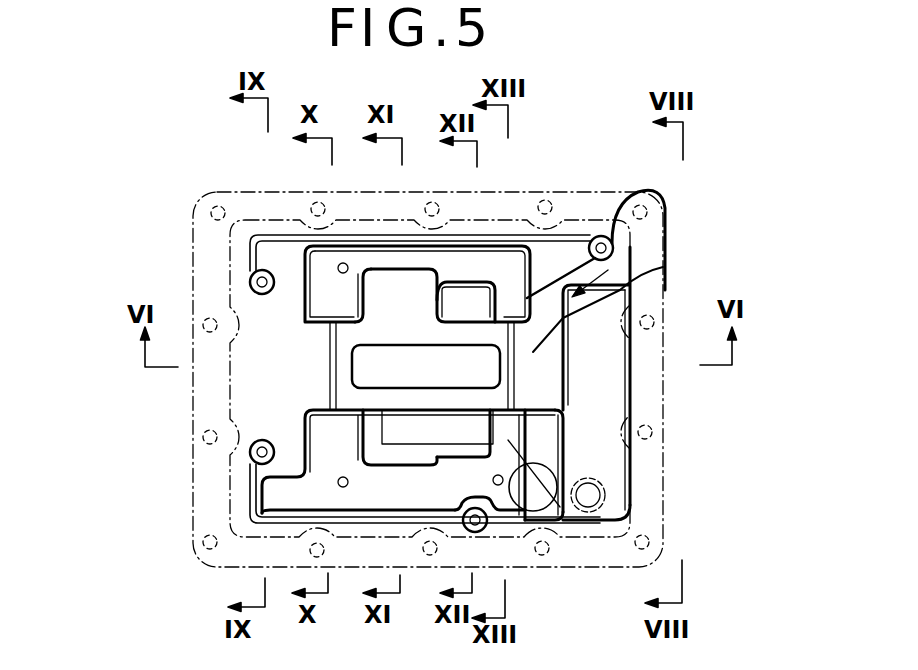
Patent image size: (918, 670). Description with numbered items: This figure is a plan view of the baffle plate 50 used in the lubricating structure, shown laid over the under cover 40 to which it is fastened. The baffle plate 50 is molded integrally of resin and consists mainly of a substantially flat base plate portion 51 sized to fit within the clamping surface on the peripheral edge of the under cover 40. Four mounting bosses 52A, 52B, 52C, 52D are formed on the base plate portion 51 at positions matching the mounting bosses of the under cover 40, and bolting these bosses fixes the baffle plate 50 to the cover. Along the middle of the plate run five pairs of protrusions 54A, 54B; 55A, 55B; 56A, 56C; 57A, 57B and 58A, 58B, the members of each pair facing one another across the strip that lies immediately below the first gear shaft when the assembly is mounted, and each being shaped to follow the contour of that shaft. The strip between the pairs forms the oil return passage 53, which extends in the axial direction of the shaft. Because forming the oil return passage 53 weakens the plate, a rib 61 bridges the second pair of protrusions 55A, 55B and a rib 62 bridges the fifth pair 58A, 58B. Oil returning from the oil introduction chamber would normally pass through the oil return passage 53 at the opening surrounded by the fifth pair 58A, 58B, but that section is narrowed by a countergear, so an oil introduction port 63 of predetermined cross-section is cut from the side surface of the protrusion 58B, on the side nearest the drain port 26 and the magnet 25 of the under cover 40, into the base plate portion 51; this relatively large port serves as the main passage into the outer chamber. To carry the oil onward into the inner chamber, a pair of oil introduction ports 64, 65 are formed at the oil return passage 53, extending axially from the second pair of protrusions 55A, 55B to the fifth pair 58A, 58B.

The under cover 40 is at (186, 410).
The baffle plate 50 is at (645, 255).
The base plate portion 51 is at (596, 376).
The mounting boss 52A is at (247, 278).
The mounting boss 52B is at (247, 457).
The mounting boss 52C is at (481, 525).
The mounting boss 52D is at (640, 195).
The oil return passage 53 is at (612, 344).
The protrusion 54A is at (290, 277).
The protrusion 54B is at (270, 490).
The protrusion 55A is at (332, 265).
The protrusion 55B is at (330, 440).
The protrusion 56A is at (398, 250).
The passage 56C is at (378, 488).
The protrusion 57A is at (456, 295).
The protrusion 57B is at (463, 470).
The protrusion 58A is at (513, 305).
The protrusion 58B is at (560, 512).
The rib 61 is at (332, 327).
The rib 62 is at (663, 267).
The oil introduction port 63 is at (563, 422).
The oil introduction port 64 is at (402, 357).
The oil introduction port 65 is at (422, 425).
The magnet 25 is at (577, 452).
The drain port 26 is at (606, 495).